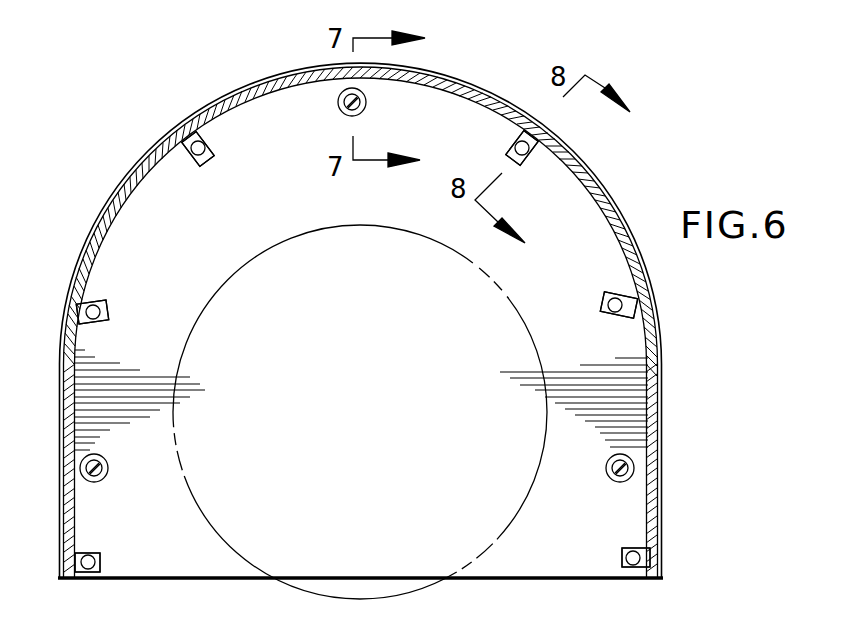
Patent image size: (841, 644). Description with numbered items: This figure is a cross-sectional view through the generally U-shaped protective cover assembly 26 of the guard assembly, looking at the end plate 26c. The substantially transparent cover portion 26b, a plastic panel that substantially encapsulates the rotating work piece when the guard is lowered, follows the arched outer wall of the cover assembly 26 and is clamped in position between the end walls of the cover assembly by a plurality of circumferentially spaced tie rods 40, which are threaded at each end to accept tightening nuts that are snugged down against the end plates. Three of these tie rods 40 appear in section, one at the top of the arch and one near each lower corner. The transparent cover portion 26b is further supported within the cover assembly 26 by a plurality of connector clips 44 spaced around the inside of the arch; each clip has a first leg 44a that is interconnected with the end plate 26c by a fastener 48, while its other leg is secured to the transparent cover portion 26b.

The protective cover assembly 26 is at (672, 367).
The transparent cover portion 26b is at (653, 330).
The end plate 26c is at (360, 412).
The tie rod 40 is at (365, 104).
The connector clip 44 is at (192, 140).
The first leg 44a is at (214, 158).
The fastener 48 is at (194, 156).